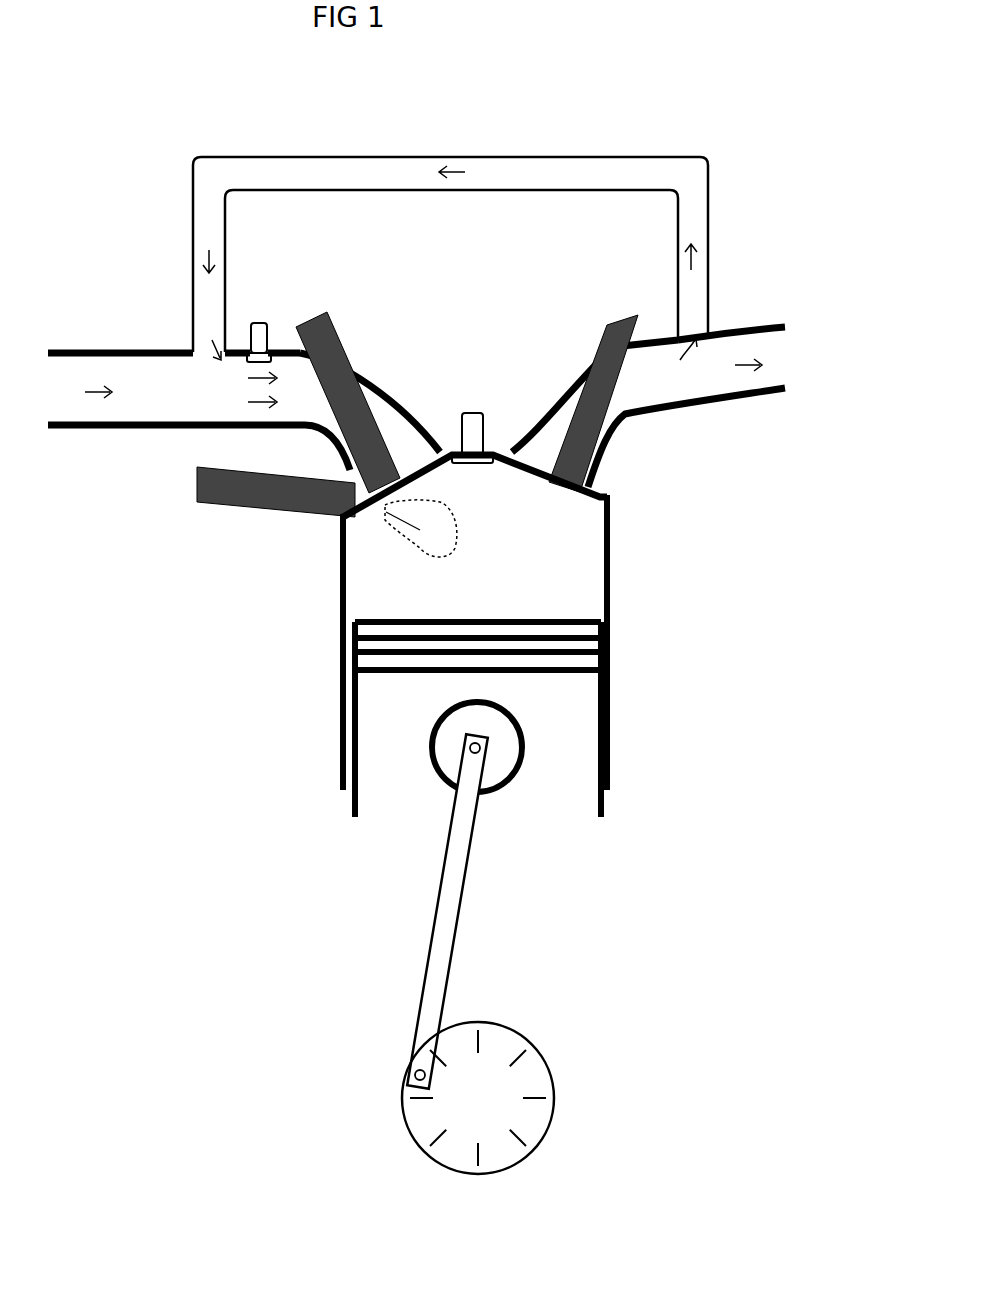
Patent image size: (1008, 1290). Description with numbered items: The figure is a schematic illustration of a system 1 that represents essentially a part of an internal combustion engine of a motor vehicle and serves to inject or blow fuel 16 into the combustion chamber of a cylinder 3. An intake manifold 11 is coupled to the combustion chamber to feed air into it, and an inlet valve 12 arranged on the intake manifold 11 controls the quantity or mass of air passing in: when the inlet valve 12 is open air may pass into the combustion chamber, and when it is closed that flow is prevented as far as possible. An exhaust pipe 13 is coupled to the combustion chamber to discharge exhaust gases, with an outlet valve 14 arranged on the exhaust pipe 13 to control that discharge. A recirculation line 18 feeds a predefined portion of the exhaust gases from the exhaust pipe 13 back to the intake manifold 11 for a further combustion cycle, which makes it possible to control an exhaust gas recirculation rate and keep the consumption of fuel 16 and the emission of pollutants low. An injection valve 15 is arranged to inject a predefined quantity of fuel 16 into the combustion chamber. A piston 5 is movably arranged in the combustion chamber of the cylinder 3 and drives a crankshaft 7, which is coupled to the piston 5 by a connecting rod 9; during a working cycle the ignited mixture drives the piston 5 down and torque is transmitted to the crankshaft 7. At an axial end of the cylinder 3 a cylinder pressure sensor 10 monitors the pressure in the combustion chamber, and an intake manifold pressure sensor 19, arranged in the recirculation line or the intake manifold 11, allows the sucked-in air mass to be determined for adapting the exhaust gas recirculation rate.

The system 1 is at (121, 207).
The cylinder 3 is at (610, 565).
The piston 5 is at (378, 747).
The crankshaft 7 is at (540, 1085).
The connecting rod 9 is at (453, 868).
The cylinder pressure sensor 10 is at (472, 410).
The intake manifold 11 is at (142, 380).
The inlet valve 12 is at (350, 410).
The exhaust pipe 13 is at (600, 437).
The outlet valve 14 is at (545, 440).
The injection valve 15 is at (226, 495).
The fuel 16 is at (420, 535).
The recirculation line 18 is at (578, 172).
The intake manifold pressure sensor 19 is at (262, 330).